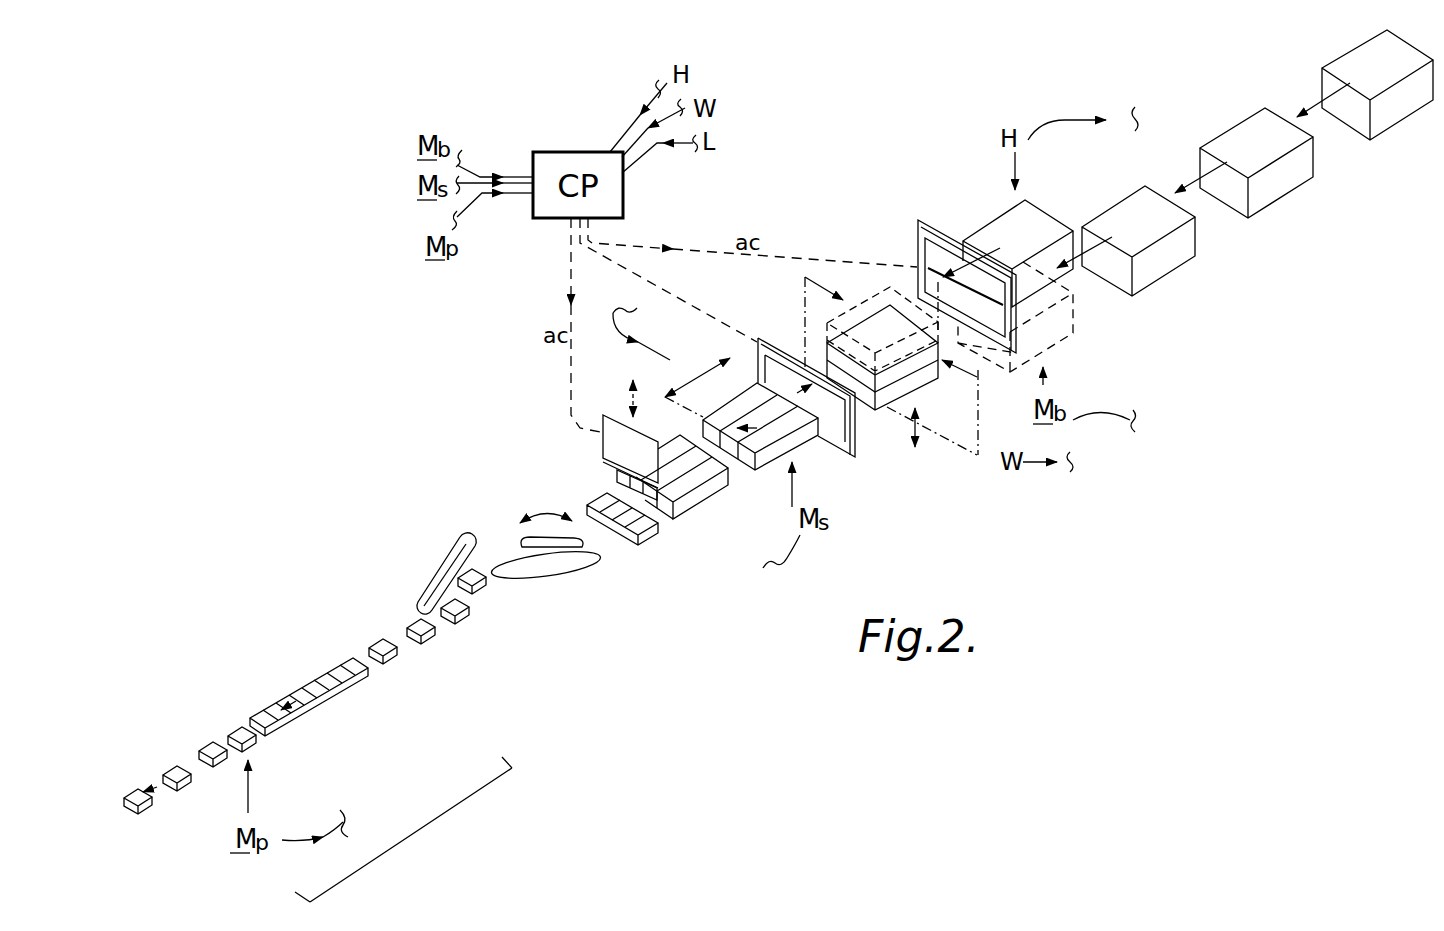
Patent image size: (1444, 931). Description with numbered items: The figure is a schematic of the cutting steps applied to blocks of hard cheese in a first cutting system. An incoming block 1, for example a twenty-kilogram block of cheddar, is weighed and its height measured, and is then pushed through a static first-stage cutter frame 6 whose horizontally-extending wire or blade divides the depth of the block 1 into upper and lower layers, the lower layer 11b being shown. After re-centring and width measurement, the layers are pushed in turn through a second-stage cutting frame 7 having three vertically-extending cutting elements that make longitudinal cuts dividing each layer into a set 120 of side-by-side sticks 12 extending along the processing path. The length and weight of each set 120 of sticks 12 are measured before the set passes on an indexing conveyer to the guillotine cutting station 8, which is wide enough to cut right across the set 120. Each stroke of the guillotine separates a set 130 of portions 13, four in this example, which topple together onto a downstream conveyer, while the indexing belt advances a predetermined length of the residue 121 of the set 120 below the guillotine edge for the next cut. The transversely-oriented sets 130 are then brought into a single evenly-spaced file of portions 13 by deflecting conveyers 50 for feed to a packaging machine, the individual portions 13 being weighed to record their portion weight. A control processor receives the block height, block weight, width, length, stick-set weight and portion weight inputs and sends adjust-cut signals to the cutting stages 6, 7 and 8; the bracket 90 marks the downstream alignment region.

The block 1 is at (1160, 260).
The first-stage cutter frame 6 is at (910, 216).
The second-stage cutting frame 7 is at (757, 338).
The guillotine cutting station 8 is at (595, 423).
The lower layer 11b is at (925, 375).
The sticks 12 is at (802, 435).
The portions 13 is at (643, 535).
The deflecting conveyers 50 is at (543, 580).
The conveyor 90 is at (423, 825).
The set of sticks 120 is at (766, 482).
The residue of the set of sticks 121 is at (702, 513).
The set of portions 130 is at (630, 550).